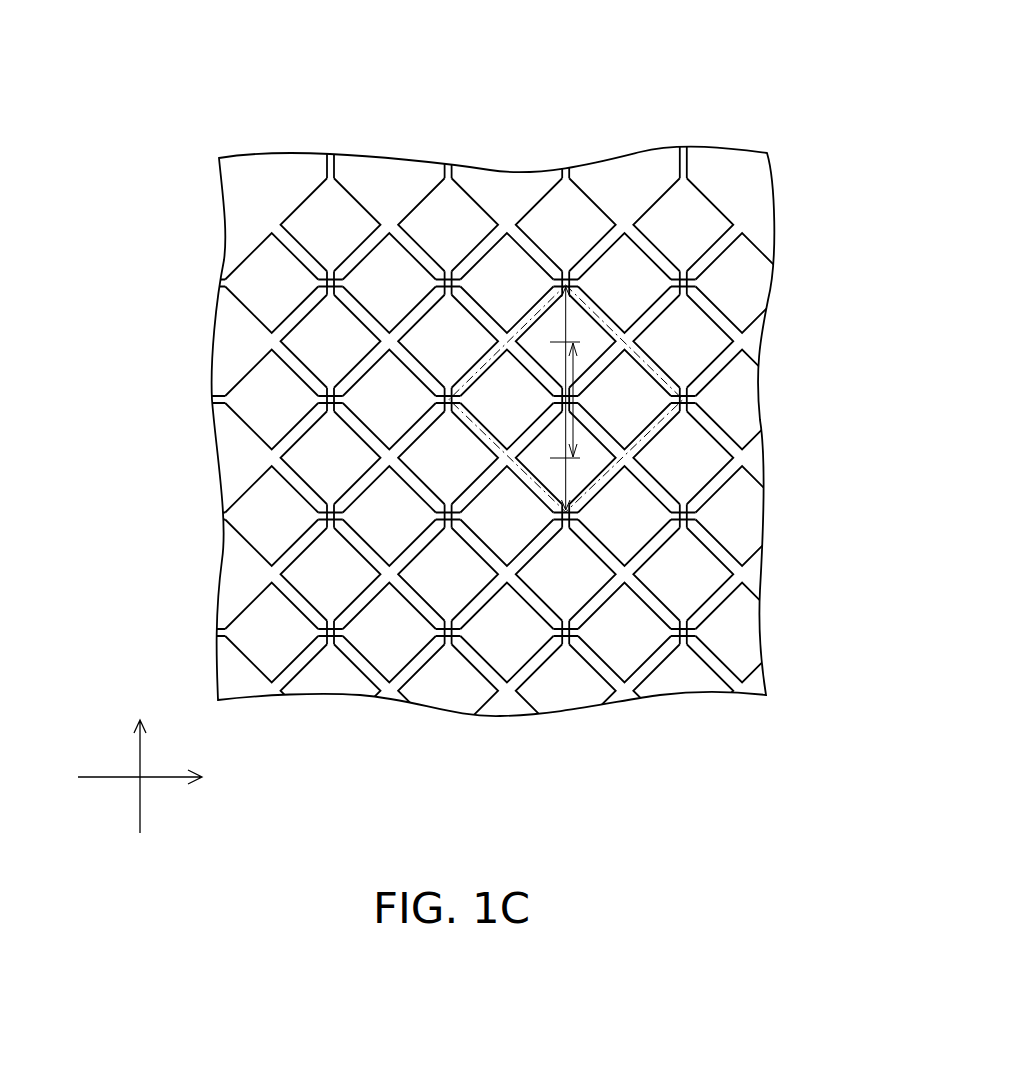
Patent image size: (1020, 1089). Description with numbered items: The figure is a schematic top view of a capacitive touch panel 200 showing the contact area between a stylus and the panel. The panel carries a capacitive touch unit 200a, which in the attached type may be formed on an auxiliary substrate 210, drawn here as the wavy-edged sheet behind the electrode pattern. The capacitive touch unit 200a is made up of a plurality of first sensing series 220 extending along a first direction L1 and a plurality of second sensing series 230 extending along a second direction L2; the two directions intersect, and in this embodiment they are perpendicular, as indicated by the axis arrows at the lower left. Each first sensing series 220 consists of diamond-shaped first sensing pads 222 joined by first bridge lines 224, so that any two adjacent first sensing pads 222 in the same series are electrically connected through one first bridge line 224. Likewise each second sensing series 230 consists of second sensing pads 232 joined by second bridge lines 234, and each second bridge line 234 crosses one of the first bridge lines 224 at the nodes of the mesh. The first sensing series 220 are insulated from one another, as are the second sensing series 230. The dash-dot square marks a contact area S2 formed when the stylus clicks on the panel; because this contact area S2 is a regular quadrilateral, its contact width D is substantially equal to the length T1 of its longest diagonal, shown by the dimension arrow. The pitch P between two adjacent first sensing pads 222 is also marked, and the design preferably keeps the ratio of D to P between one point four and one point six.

The capacitive touch panel 200 is at (447, 413).
The capacitive touch unit 200a is at (425, 377).
The auxiliary substrate 210 is at (750, 188).
The first sensing series 220 is at (514, 377).
The first sensing pads 222 is at (678, 212).
The first bridge lines 224 is at (687, 165).
The second sensing series 230 is at (423, 444).
The second sensing pads 232 is at (265, 278).
The second bridge lines 234 is at (222, 283).
The contact area S2 is at (650, 360).
The pitch P is at (570, 370).
The length of the longest diagonal T1 is at (566, 328).
The first direction L1 is at (142, 757).
The second direction L2 is at (156, 777).